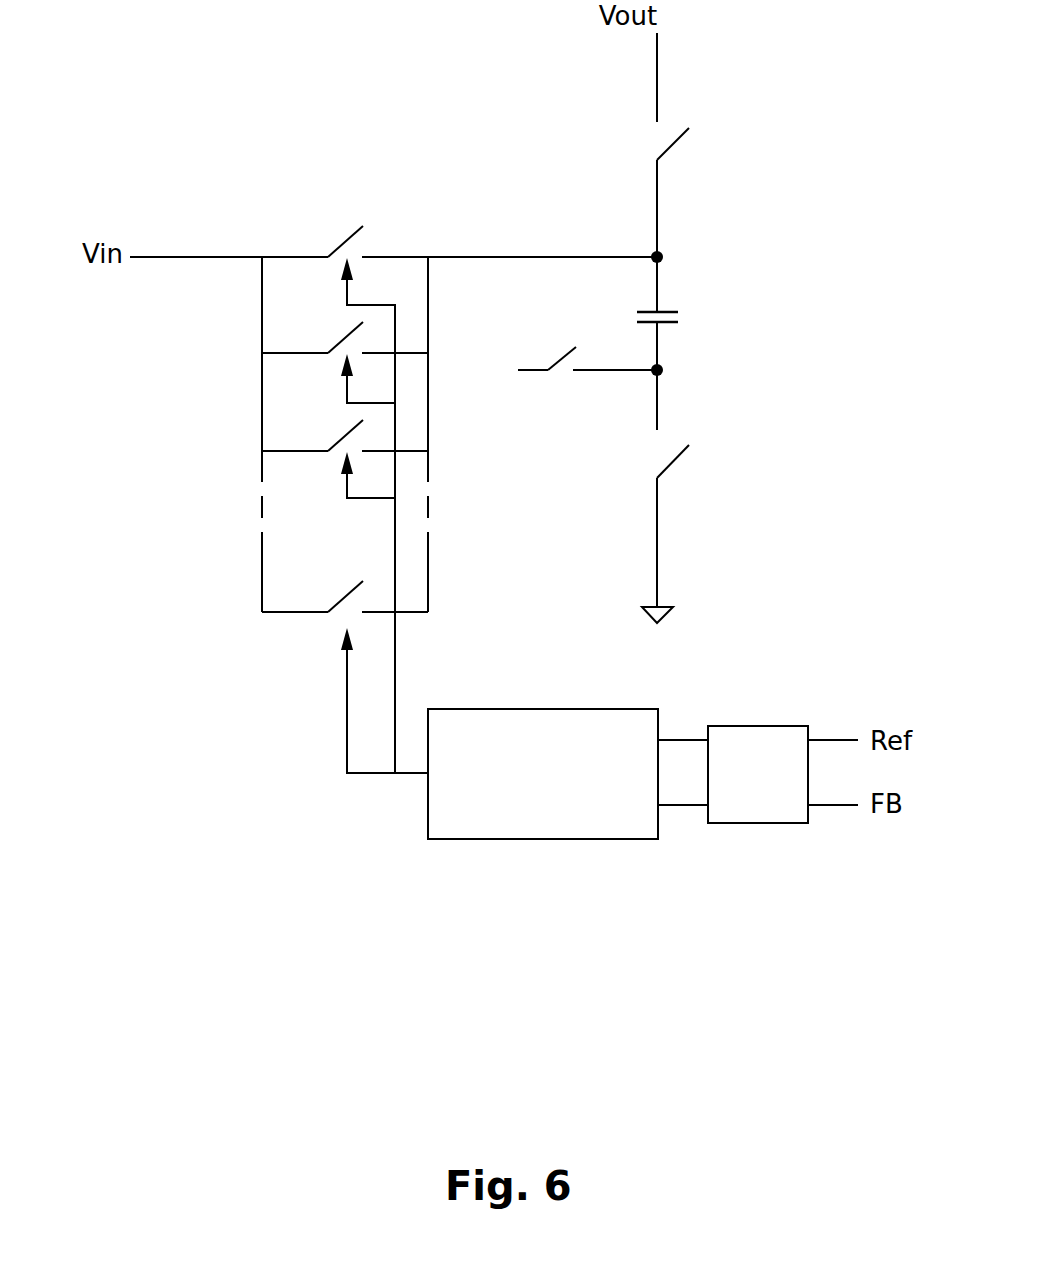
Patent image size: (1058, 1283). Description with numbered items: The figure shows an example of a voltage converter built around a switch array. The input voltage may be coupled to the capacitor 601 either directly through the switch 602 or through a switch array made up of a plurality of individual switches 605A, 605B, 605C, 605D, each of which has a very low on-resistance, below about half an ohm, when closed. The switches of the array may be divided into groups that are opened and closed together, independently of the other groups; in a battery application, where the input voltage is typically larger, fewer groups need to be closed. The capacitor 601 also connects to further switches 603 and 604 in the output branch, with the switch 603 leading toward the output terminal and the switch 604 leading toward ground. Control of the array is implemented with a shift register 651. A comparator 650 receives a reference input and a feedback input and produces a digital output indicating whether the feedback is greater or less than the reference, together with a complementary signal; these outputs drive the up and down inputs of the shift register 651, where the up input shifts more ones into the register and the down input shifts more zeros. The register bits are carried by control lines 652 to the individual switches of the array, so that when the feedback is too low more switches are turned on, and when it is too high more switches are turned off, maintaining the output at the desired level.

The capacitor 601 is at (670, 300).
The switch 602 is at (558, 353).
The switch S2 603 is at (673, 152).
The switch S3 604 is at (679, 468).
The switch 605A is at (345, 230).
The switch 605B is at (340, 342).
The switch 605C is at (337, 435).
The switch 605D is at (338, 597).
The comparator 650 is at (753, 723).
The shift register 651 is at (539, 705).
The switch control lines 652 is at (378, 782).